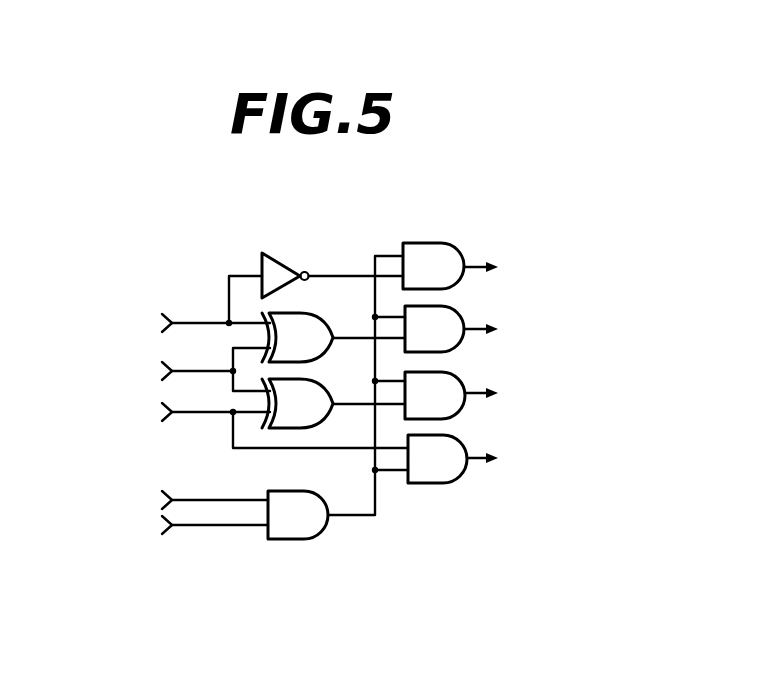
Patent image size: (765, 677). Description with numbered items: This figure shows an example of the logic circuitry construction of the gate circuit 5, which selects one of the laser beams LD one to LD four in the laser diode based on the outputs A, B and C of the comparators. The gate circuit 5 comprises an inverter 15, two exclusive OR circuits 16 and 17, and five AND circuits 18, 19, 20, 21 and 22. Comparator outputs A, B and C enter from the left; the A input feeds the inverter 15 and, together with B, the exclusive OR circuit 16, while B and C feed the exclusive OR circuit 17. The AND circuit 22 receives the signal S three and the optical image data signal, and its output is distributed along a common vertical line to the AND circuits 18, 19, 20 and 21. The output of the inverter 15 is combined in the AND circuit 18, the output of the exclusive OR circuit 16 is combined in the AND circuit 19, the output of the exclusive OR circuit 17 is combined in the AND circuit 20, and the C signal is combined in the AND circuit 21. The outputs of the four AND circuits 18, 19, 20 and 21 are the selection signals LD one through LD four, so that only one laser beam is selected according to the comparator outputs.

The gate circuit 5 is at (492, 235).
The inverter 15 is at (281, 259).
The exclusive OR circuit 16 is at (298, 313).
The exclusive OR circuit 17 is at (305, 379).
The AND circuit 18 is at (412, 243).
The AND circuit 19 is at (455, 308).
The AND circuit 20 is at (462, 410).
The AND circuit 21 is at (440, 485).
The AND circuit 22 is at (293, 489).